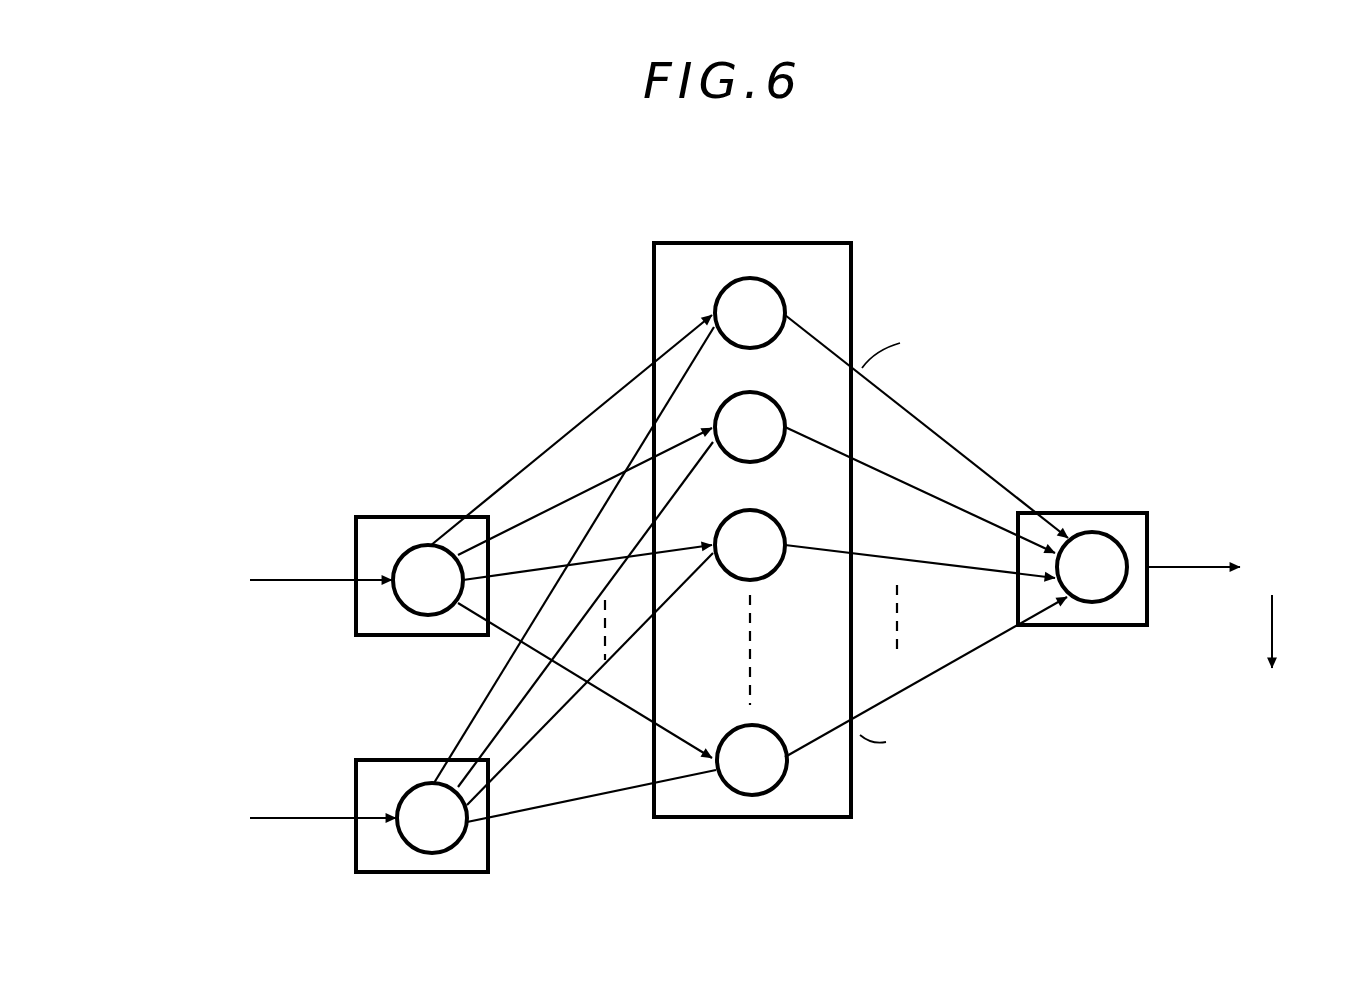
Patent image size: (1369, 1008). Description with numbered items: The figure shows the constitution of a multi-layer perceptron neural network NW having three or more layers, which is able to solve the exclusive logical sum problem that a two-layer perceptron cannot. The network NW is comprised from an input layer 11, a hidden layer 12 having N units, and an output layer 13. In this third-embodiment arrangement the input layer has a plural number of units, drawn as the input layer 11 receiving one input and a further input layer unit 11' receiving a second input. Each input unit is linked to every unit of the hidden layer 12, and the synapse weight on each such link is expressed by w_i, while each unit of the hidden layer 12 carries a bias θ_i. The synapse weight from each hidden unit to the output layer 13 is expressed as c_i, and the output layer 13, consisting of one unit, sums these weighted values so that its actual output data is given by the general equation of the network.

The input layer 11 is at (422, 533).
The input layer unit 11' is at (422, 784).
The hidden layer 12 is at (700, 243).
The output layer 13 is at (1058, 513).
The neural network NW is at (947, 236).